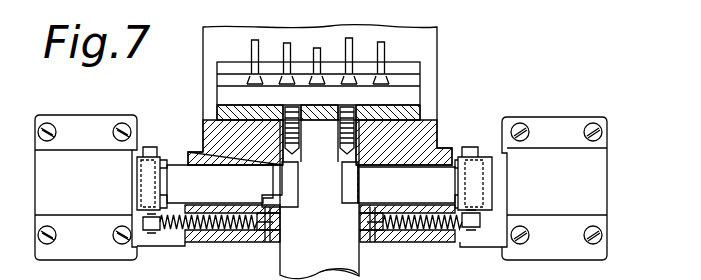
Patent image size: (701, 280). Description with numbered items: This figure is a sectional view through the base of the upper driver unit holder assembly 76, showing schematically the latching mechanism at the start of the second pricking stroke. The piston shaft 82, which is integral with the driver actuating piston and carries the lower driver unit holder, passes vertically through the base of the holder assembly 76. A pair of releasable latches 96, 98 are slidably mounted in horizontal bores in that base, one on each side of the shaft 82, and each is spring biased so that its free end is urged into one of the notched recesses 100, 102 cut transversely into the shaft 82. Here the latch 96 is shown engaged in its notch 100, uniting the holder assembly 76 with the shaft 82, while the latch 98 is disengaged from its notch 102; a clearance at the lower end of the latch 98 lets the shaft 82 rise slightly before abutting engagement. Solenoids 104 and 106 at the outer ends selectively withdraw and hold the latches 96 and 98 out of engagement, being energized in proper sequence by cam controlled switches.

The driver unit holder 76 is at (437, 127).
The piston shaft 82 is at (328, 265).
The latch 96 is at (438, 203).
The latch 98 is at (195, 195).
The notched recess 100 is at (348, 165).
The notched recess 102 is at (298, 178).
The solenoid 104 is at (567, 191).
The solenoid 106 is at (97, 196).